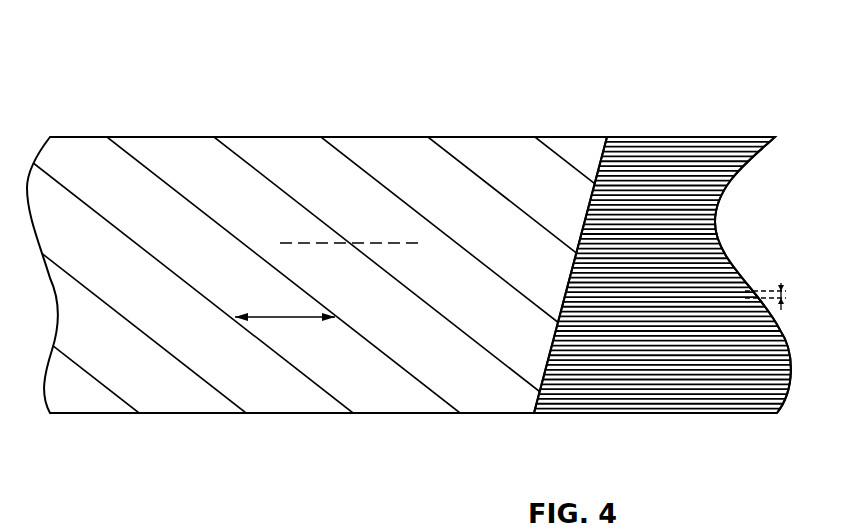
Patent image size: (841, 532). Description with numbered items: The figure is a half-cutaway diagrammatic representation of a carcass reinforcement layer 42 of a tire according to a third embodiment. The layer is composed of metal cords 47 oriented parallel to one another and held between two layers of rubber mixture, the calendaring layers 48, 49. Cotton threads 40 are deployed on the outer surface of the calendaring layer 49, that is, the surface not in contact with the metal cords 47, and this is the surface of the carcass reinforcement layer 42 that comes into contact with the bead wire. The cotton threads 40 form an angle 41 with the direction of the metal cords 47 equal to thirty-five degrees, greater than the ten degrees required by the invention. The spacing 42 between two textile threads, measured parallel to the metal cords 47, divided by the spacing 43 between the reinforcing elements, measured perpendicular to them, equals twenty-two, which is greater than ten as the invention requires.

The cotton threads 40 is at (146, 166).
The angle 41 is at (368, 243).
The carcass reinforcement layer 42 is at (324, 94).
The spacing between reinforcing elements 43 is at (784, 296).
The metal cords 47 is at (716, 192).
The calendaring layer 48 is at (707, 147).
The calendaring layer 49 is at (523, 155).